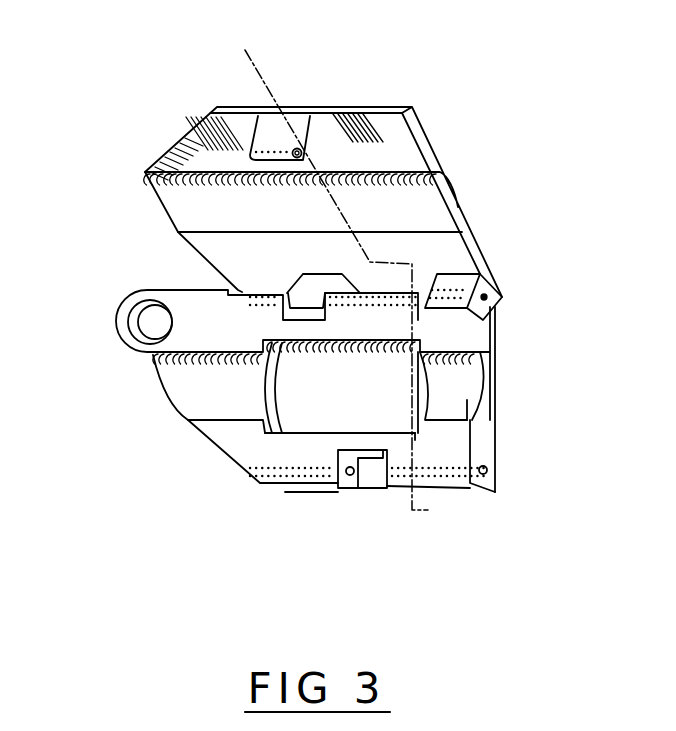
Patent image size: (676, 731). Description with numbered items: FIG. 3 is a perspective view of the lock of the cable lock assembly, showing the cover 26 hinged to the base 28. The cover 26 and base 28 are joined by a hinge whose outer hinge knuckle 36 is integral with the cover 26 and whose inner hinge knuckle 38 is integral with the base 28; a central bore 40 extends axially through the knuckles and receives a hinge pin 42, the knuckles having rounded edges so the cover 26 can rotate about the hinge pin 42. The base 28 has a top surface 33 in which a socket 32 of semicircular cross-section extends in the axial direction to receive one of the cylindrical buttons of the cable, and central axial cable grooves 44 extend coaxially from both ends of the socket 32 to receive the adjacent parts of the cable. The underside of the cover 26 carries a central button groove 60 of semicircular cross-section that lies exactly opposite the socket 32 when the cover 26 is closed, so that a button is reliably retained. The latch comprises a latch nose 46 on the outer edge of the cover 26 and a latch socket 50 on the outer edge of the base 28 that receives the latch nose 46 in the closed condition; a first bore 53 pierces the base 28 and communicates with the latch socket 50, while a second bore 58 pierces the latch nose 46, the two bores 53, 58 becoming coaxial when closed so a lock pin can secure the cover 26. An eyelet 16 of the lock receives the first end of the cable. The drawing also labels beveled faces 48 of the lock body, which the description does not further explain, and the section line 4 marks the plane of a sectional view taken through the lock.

The section line 4- 4 is at (336, 274).
The eyelet 16 is at (134, 329).
The cover 26 is at (424, 134).
The base 28 is at (488, 365).
The socket 32 is at (330, 413).
The top surface 33 is at (457, 443).
The outer hinge knuckle 36 is at (340, 277).
The inner hinge knuckle 38 is at (380, 308).
The central bore 40 is at (470, 283).
The hinge pin 42 is at (487, 297).
The central axial cable grooves 44 is at (457, 392).
The latch nose 46 is at (276, 137).
The chamfer face 48 is at (232, 258).
The latch socket 50 is at (367, 455).
The first bore 53 is at (452, 475).
The second bore 58 is at (299, 148).
The central button groove 60 is at (197, 210).